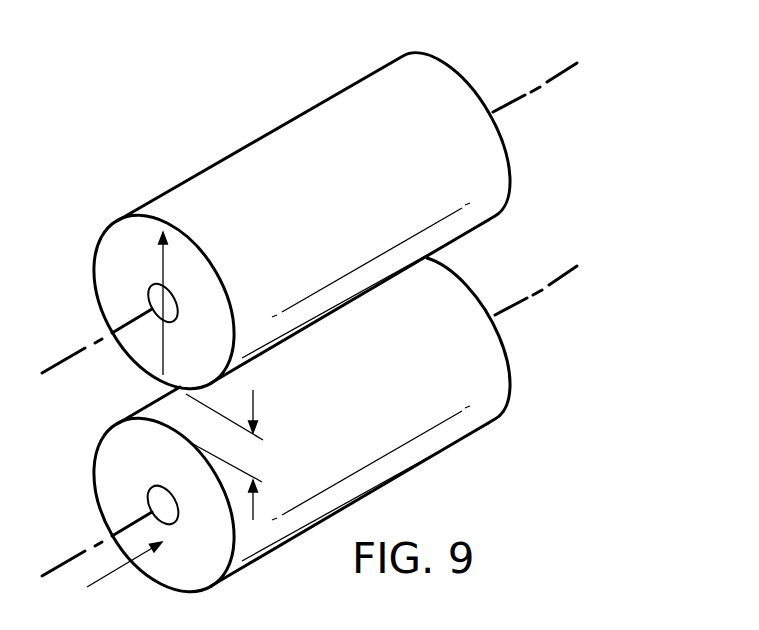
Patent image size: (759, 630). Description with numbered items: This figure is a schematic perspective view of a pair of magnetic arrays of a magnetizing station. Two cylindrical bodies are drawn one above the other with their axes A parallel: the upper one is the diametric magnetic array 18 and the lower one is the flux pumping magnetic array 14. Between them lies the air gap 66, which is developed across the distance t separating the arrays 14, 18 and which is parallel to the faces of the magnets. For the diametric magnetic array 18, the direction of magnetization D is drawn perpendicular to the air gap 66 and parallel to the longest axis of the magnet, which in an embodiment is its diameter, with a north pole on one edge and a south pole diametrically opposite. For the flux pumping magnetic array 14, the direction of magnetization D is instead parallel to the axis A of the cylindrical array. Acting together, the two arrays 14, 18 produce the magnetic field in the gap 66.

The diametric magnetic array 18 is at (491, 58).
The flux pumping magnetic array 14 is at (537, 365).
The air gap 66 is at (129, 390).